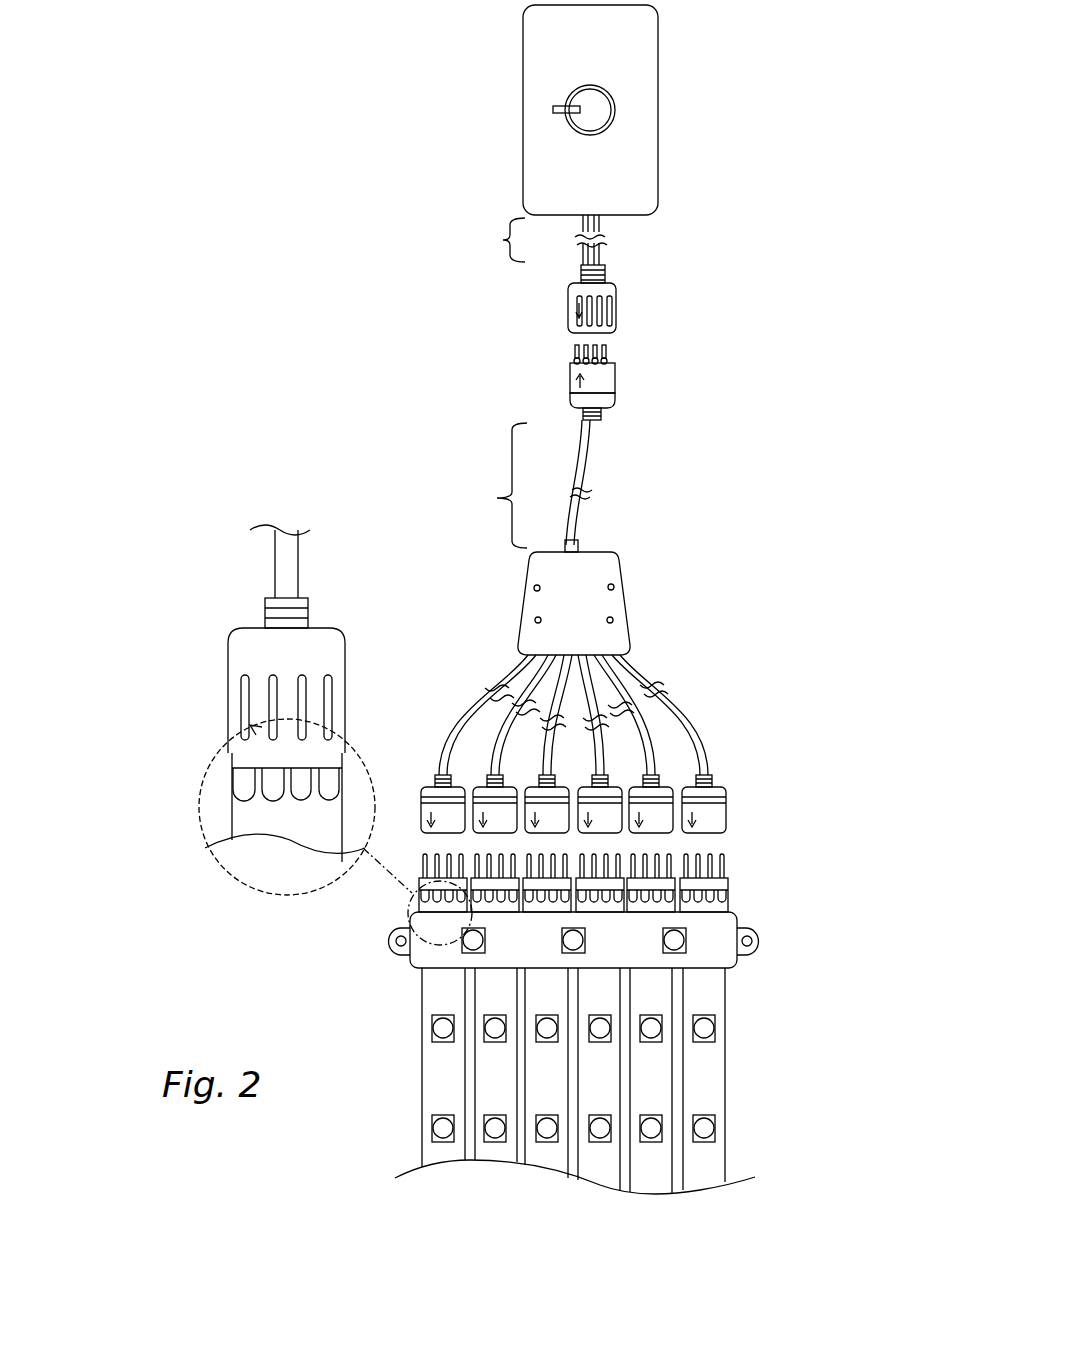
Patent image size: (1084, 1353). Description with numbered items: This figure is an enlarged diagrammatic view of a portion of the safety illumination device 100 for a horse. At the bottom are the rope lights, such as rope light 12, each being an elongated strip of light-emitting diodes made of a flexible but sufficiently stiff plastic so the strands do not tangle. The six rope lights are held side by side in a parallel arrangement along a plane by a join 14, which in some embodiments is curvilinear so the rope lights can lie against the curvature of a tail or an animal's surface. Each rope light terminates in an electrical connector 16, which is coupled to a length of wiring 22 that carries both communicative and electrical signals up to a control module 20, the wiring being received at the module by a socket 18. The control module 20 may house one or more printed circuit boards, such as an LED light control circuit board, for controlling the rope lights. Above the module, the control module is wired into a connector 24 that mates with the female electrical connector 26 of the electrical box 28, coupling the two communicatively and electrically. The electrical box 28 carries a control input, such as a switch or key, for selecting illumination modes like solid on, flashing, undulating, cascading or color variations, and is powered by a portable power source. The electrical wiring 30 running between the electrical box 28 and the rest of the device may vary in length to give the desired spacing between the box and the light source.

The safety illumination device 100 is at (773, 220).
The rope light 12 is at (435, 1072).
The join 14 is at (722, 940).
The electrical connector 16 is at (718, 870).
The socket 18 is at (714, 800).
The control module 20 is at (605, 600).
The wiring 22 is at (517, 677).
The connector 24 is at (604, 385).
The female electrical connector 26 is at (603, 295).
The electrical box 28 is at (641, 170).
The electrical wiring 30 is at (495, 497).